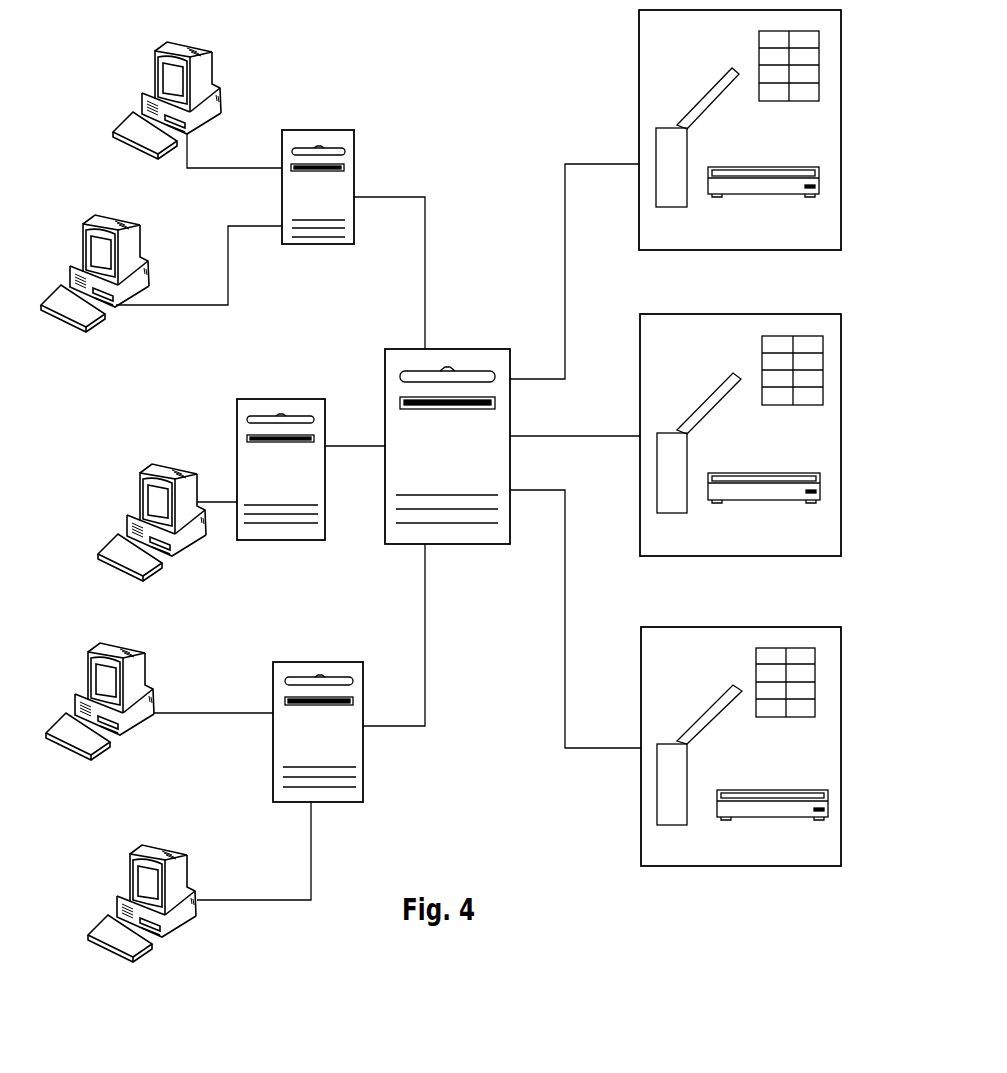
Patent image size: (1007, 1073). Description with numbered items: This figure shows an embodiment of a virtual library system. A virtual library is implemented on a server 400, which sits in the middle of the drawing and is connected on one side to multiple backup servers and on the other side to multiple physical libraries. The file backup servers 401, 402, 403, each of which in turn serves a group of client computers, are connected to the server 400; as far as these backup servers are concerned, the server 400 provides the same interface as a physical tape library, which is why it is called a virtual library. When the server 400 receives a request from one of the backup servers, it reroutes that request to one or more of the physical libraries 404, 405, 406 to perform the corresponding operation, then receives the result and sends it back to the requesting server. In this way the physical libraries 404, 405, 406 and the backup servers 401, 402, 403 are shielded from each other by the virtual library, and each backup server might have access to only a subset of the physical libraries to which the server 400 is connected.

The server 400 is at (457, 348).
The file backup server 401 is at (354, 155).
The file backup server 402 is at (288, 399).
The file backup server 403 is at (363, 766).
The physical library 404 is at (841, 116).
The physical library 405 is at (841, 471).
The physical library 406 is at (841, 760).